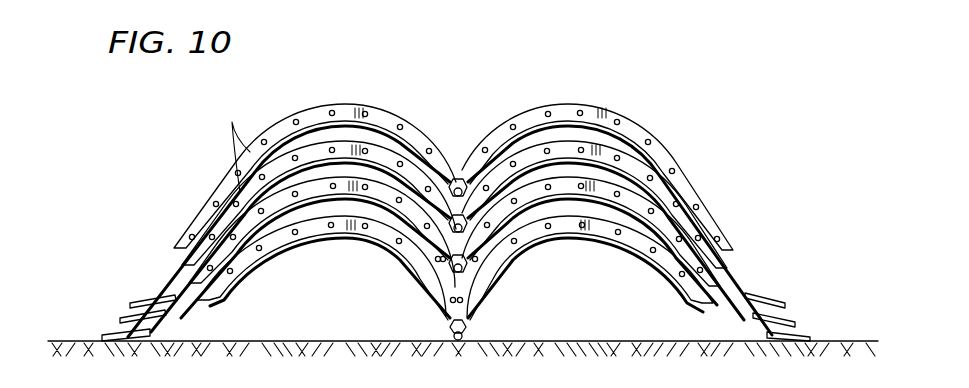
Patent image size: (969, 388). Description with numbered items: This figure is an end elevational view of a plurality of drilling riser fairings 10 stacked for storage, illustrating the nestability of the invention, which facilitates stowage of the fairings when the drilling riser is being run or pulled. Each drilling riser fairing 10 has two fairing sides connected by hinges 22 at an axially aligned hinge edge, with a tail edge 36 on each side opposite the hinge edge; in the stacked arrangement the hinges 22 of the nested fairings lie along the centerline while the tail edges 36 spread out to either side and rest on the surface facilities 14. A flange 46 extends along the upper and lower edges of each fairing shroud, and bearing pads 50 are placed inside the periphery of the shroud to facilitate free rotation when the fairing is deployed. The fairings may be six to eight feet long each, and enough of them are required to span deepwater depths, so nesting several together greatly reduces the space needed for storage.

The drilling riser fairing 10 is at (292, 192).
The surface facilities 14 is at (296, 340).
The hinge 22 is at (466, 333).
The tail edge 36 is at (128, 303).
The flange 46 is at (612, 114).
The bearing pad 50 is at (430, 296).